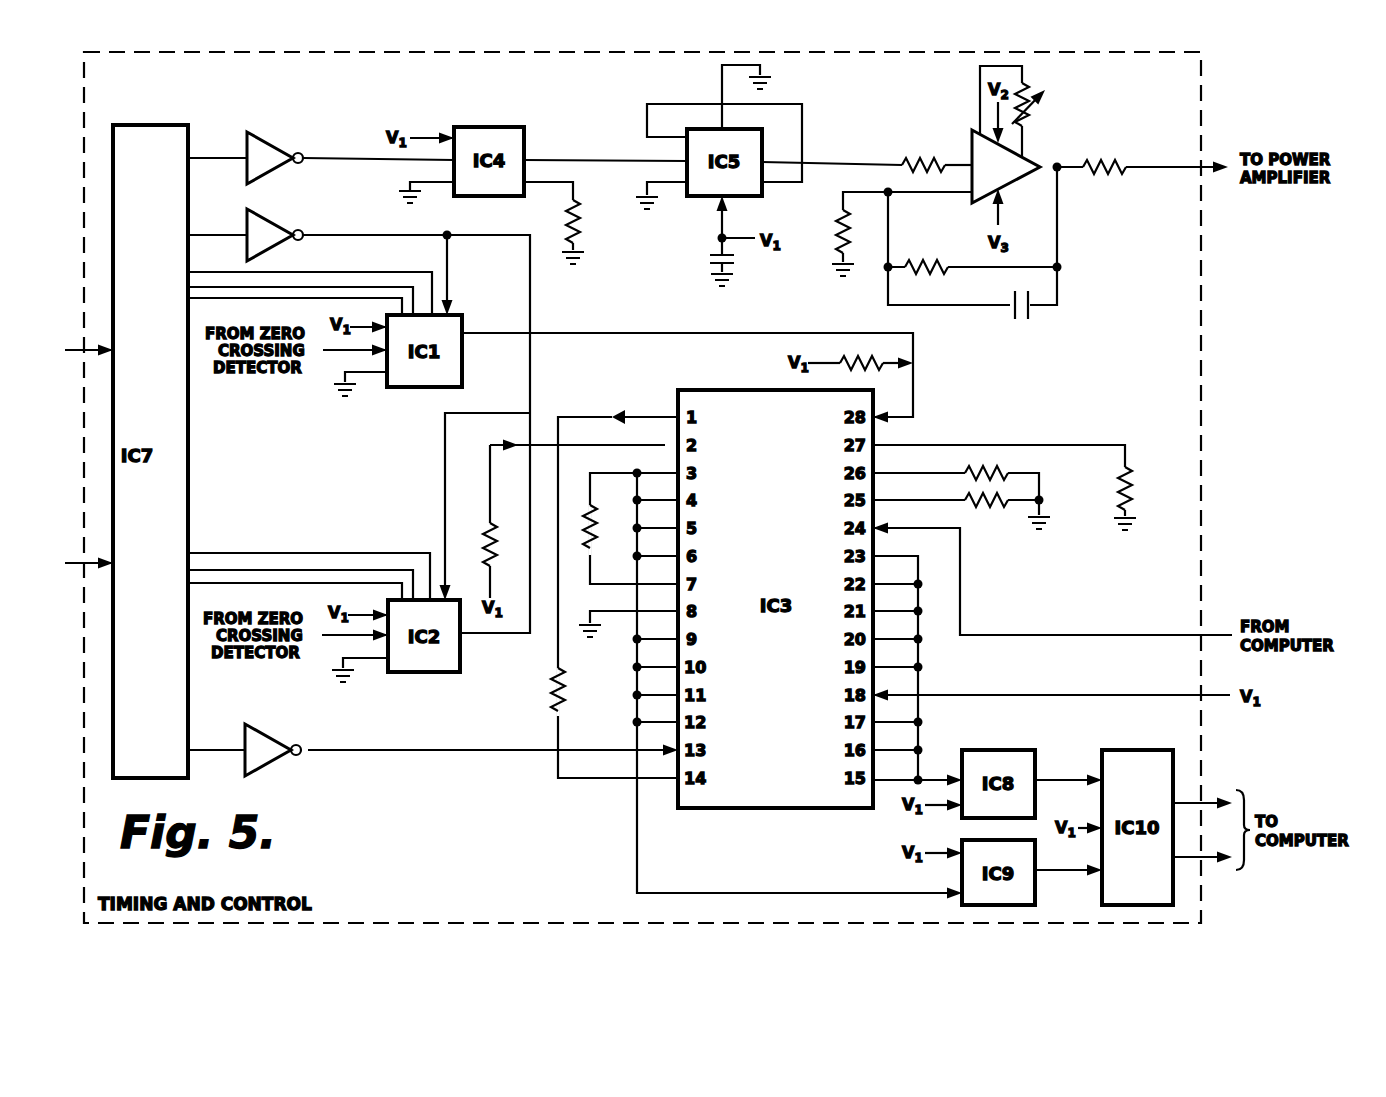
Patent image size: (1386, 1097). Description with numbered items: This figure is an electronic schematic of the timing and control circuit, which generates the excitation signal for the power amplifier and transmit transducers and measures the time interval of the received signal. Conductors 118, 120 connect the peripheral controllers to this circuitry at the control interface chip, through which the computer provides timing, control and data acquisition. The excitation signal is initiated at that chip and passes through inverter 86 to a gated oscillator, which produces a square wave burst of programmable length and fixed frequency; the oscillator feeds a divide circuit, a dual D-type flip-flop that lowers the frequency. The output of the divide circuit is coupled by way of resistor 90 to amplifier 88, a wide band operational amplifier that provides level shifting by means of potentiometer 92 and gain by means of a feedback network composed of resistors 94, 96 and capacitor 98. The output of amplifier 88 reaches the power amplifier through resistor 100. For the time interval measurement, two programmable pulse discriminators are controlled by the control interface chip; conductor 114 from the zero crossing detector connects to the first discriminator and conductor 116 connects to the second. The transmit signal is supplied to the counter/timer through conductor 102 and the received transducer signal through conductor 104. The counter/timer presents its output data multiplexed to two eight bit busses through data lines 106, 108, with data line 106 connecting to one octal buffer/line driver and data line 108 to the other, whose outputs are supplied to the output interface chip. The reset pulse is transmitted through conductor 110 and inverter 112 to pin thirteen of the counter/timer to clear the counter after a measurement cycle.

The inverter 86 is at (284, 140).
The amplifier 88 is at (962, 135).
The resistor 90 is at (916, 163).
The potentiometer 92 is at (1038, 120).
The resistor 94 is at (840, 230).
The resistor 96 is at (945, 268).
The capacitor 98 is at (1030, 312).
The resistor 100 is at (1103, 171).
The conductor 102 is at (712, 334).
The conductor 104 is at (490, 637).
The data line 106 is at (932, 778).
The data line 108 is at (736, 893).
The conductor 110 is at (214, 748).
The inverter 112 is at (272, 730).
The conductor 114 is at (345, 352).
The conductor 116 is at (352, 636).
The conductor 118 is at (92, 352).
The conductor 120 is at (90, 565).